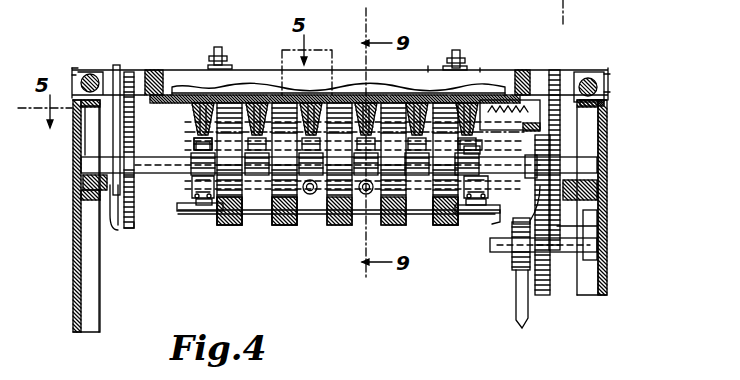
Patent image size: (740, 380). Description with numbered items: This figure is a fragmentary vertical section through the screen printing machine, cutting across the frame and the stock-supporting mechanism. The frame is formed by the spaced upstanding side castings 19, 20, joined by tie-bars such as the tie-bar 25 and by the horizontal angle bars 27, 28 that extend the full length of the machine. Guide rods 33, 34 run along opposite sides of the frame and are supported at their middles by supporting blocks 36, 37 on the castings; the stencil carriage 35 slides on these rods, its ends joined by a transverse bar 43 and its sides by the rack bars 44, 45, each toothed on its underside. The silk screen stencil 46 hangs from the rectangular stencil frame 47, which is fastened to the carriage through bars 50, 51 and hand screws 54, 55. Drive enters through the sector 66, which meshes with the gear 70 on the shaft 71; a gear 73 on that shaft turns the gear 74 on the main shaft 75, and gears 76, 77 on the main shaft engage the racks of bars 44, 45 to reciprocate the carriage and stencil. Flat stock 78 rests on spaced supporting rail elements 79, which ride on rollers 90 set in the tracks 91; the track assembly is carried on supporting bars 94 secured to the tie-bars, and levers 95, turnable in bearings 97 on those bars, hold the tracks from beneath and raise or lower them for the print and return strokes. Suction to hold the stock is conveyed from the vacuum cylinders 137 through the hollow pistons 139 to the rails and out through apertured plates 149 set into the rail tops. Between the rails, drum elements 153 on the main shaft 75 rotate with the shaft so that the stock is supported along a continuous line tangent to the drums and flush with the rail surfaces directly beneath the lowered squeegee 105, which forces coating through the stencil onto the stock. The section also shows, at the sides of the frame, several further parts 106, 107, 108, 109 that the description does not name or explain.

The side casting 19 is at (607, 270).
The side casting 20 is at (73, 242).
The tie-bar 25 is at (262, 222).
The angle bar 27 is at (600, 206).
The angle bar 28 is at (112, 226).
The guide rod 33 is at (608, 90).
The guide rod 34 is at (90, 73).
The stencil carriage 35 is at (152, 72).
The supporting block 36 is at (608, 76).
The supporting block 37 is at (74, 70).
The transverse bar 43 is at (528, 70).
The rack bar 44 is at (555, 72).
The rack bar 45 is at (135, 105).
The silk screen stencil 46 is at (246, 92).
The stencil frame 47 is at (428, 68).
The bar 50 is at (488, 66).
The bar 51 is at (214, 56).
The hand screw 54 is at (460, 54).
The hand screw 55 is at (226, 56).
The sector 66 is at (516, 296).
The gear 70 is at (515, 268).
The shaft 71 is at (490, 246).
The gear 73 is at (544, 292).
The gear 74 is at (514, 219).
The main shaft 75 is at (135, 180).
The gear 76 is at (598, 226).
The gear 77 is at (136, 228).
The flat stock 78 is at (334, 96).
The supporting rail element 79 is at (192, 108).
The roller 90 is at (194, 140).
The track 91 is at (196, 148).
The supporting bar 94 is at (177, 210).
The lever 95 is at (192, 188).
The bearing 97 is at (205, 206).
The squeegee 105 is at (396, 86).
The inner frame 106 is at (580, 128).
The inner wall 107 is at (99, 134).
The rod 108 is at (590, 74).
The post 109 is at (116, 65).
The vacuum cylinder 137 is at (306, 195).
The hollow piston 139 is at (352, 200).
The plate 149 is at (190, 88).
The drum element 153 is at (230, 226).